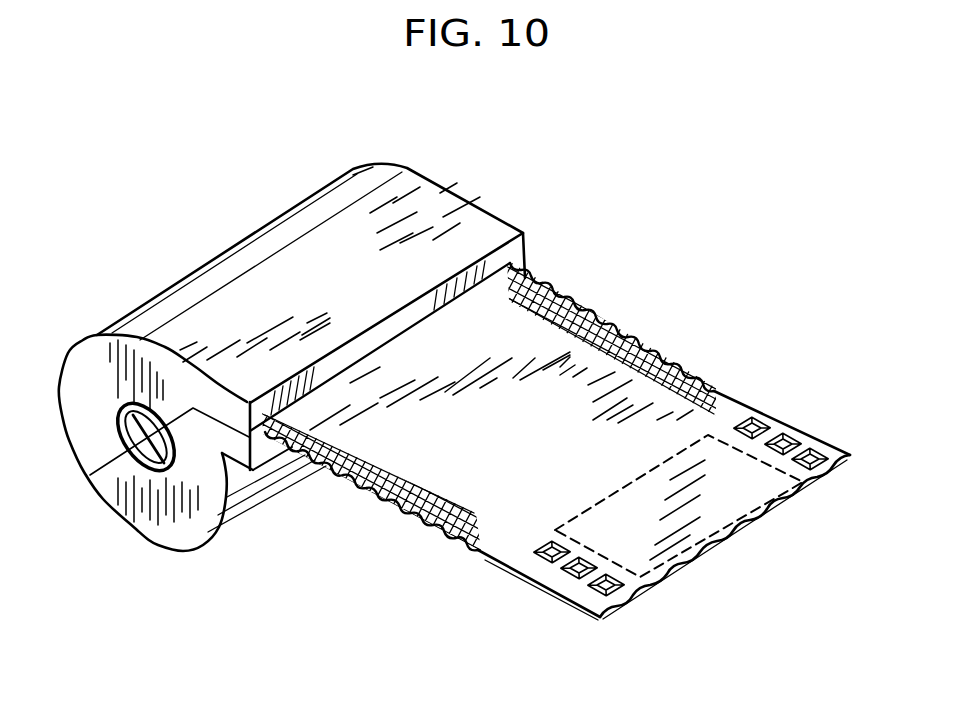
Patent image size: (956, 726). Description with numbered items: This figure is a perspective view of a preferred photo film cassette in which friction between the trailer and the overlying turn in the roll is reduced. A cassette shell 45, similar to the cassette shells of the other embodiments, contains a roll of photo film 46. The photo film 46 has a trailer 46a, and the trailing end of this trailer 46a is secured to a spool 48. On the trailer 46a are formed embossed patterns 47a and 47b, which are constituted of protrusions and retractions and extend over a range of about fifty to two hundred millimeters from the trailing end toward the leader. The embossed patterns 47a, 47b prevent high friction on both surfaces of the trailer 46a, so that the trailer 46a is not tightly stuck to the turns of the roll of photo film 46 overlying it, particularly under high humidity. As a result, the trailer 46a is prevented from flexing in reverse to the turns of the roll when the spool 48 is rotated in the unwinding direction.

The cassette shell 45 is at (450, 193).
The photo film 46 is at (758, 402).
The trailer 46a is at (462, 398).
The embossed pattern 47a is at (373, 495).
The embossed pattern 47b is at (576, 300).
The spool 48 is at (155, 468).